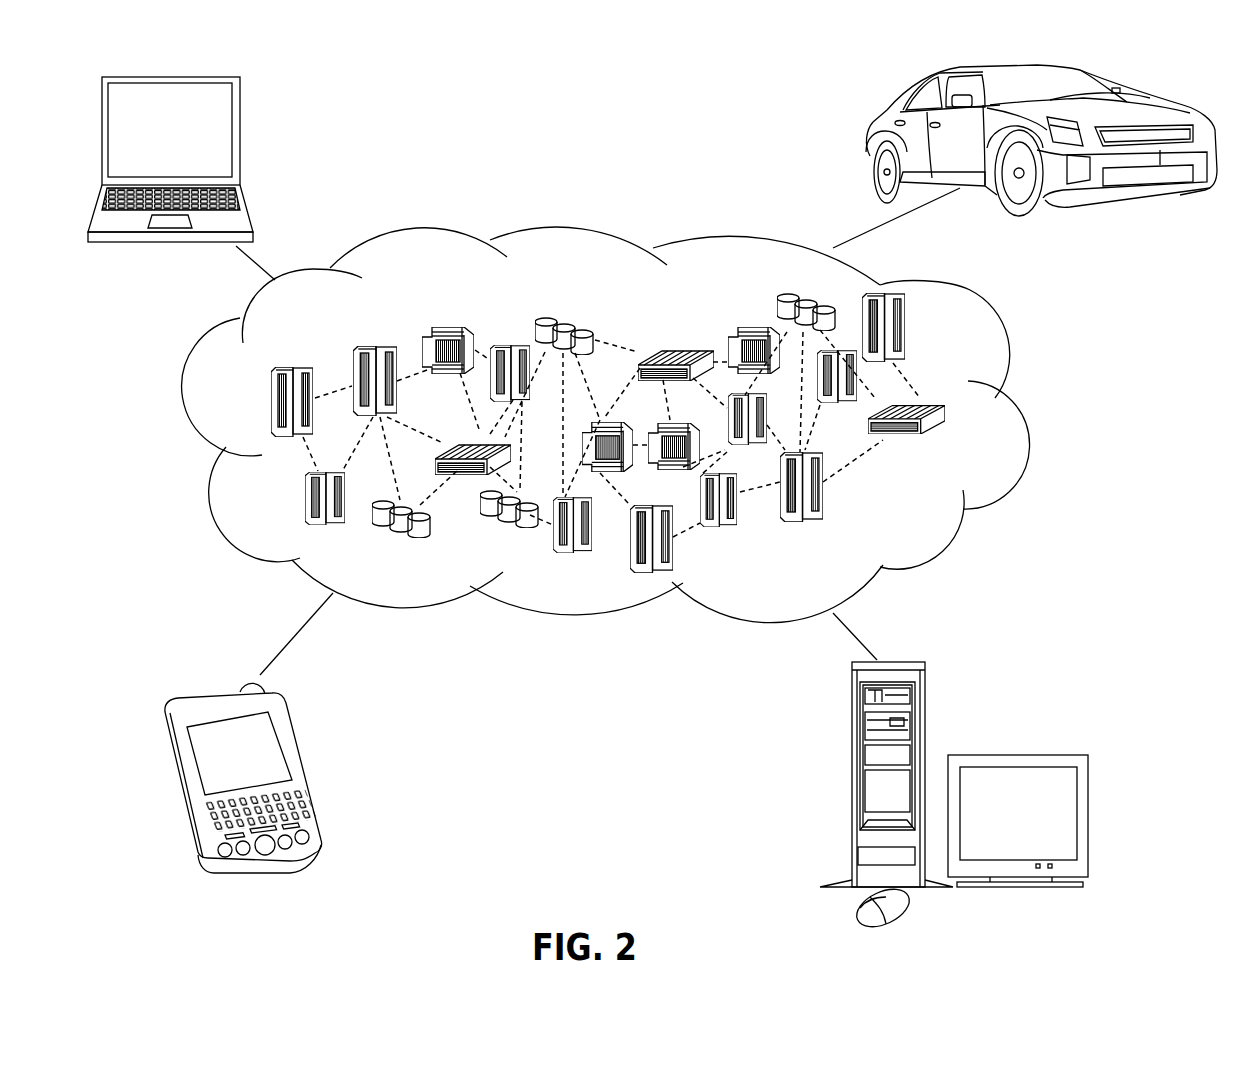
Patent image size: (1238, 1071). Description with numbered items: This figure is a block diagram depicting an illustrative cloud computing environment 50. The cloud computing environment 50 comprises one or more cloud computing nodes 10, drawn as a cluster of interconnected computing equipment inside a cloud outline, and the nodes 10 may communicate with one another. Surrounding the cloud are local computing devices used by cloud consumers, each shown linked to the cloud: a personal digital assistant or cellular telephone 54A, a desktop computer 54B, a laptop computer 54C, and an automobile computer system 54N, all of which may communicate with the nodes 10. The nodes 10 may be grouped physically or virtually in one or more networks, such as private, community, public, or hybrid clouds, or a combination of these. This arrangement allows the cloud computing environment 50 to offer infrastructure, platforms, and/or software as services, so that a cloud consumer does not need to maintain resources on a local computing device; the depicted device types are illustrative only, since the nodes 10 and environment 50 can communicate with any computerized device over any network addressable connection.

The cloud computing node 10 is at (932, 517).
The cloud computing environment 50 is at (1015, 413).
The personal digital assistant (PDA) or cellular telephone 54A is at (292, 737).
The desktop computer 54B is at (850, 720).
The laptop computer 54C is at (240, 113).
The automobile computer system 54N is at (868, 127).